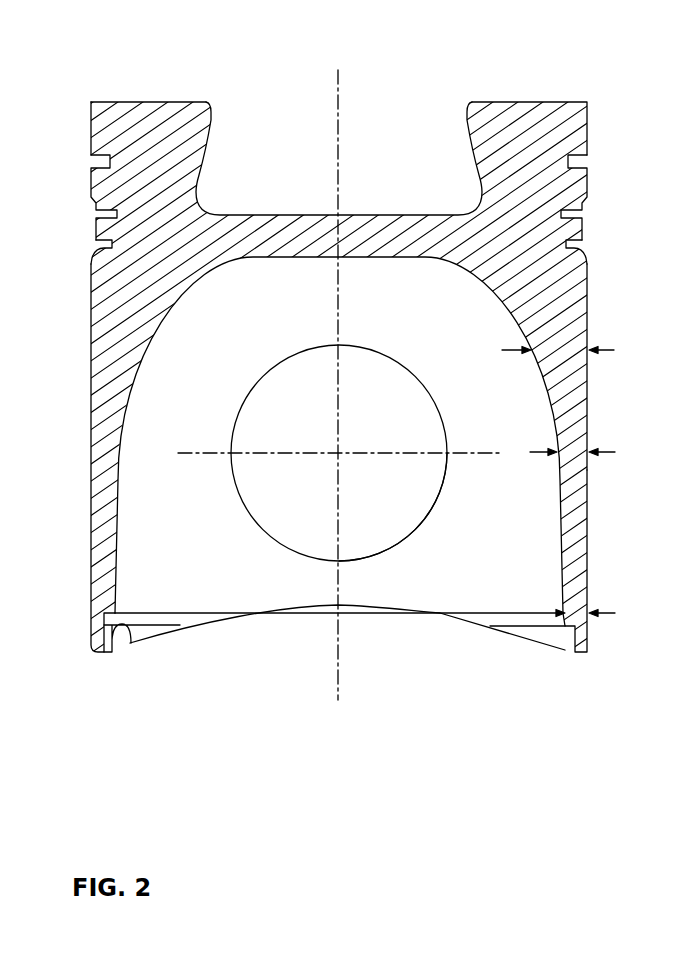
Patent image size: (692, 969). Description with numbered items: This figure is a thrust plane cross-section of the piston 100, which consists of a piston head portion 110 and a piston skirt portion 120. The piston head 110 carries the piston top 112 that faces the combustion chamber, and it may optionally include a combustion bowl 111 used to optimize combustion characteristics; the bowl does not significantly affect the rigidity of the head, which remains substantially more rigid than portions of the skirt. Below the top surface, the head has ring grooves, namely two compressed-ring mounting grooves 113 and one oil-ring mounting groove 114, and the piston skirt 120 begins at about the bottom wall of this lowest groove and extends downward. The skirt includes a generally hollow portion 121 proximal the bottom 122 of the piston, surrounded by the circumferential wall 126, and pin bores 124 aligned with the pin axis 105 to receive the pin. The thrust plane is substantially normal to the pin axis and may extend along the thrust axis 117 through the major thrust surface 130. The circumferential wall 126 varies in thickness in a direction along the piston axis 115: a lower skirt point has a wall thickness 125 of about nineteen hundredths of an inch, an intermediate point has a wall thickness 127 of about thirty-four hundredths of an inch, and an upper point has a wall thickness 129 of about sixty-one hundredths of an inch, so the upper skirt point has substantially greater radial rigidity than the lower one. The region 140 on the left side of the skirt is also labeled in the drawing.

The piston 100 is at (137, 58).
The pin axis 105 is at (340, 452).
The piston head portion 110 is at (597, 171).
The combustion bowl 111 is at (254, 120).
The piston top 112 is at (148, 102).
The compressed-ring mounting grooves 113 is at (98, 165).
The oil-ring mounting groove 114 is at (100, 248).
The piston axis 115 is at (340, 83).
The thrust axis 117 is at (483, 451).
The piston skirt portion 120 is at (597, 283).
The hollow portion 121 is at (243, 585).
The bottom 122 is at (97, 655).
The pin bores 124 is at (440, 492).
The wall thickness 125 is at (578, 610).
The circumferential wall 126 is at (570, 430).
The wall thickness 127 is at (573, 457).
The wall thickness 129 is at (563, 348).
The major thrust surface 130 is at (590, 560).
The skirt left wall 140 is at (90, 532).